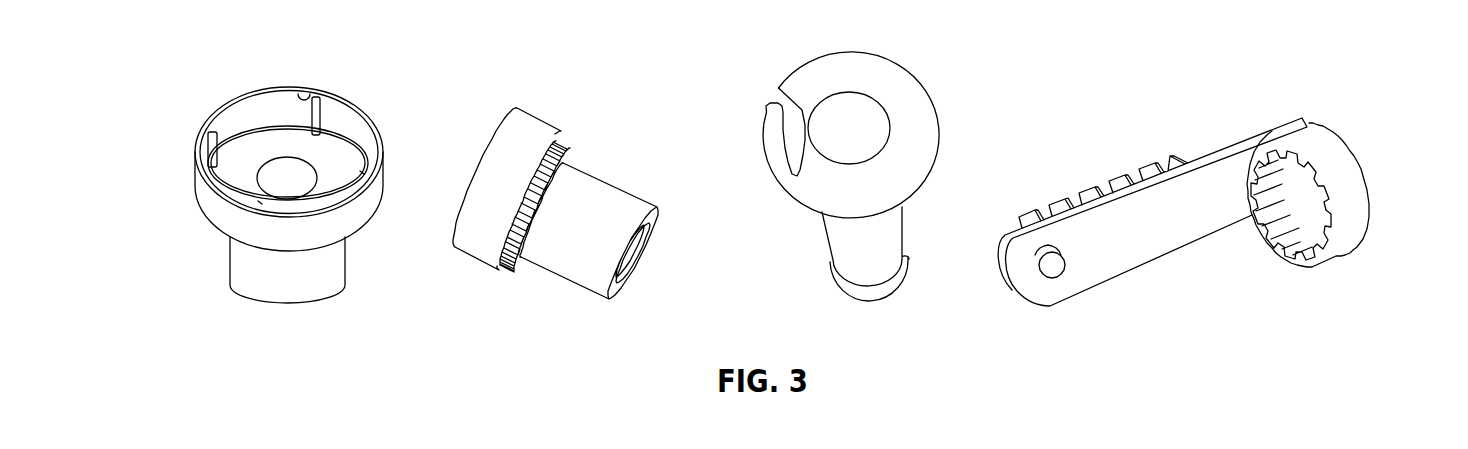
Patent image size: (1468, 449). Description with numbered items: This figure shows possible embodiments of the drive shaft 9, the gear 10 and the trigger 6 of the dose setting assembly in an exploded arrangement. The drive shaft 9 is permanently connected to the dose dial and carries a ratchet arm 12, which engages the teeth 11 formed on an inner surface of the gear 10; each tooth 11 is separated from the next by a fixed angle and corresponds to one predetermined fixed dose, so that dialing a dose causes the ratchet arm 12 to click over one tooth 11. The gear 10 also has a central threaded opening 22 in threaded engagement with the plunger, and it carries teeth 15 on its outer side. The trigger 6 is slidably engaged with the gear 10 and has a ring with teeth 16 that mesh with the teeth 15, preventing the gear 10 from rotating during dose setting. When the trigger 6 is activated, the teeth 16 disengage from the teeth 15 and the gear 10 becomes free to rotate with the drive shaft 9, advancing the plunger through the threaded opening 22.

The trigger 6 is at (1203, 148).
The drive shaft 9 is at (855, 248).
The gear 10 is at (240, 261).
The teeth 11 is at (298, 93).
The ratchet arm 12 is at (763, 132).
The teeth 15 is at (570, 147).
The teeth 16 is at (1293, 233).
The central threaded opening 22 is at (303, 173).